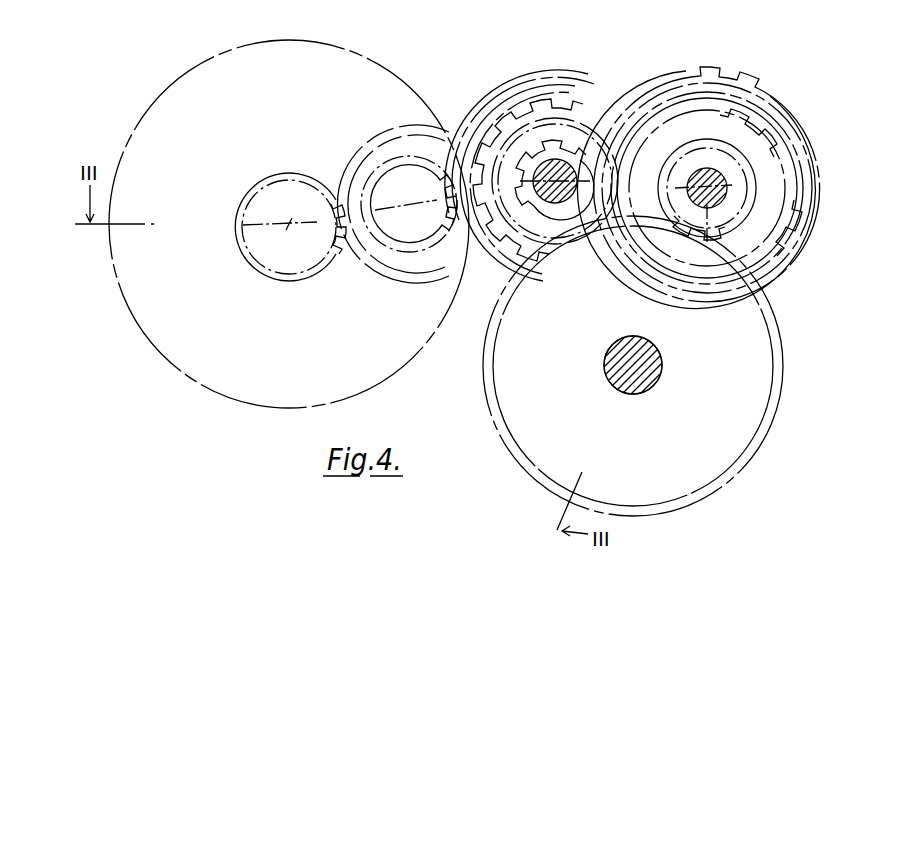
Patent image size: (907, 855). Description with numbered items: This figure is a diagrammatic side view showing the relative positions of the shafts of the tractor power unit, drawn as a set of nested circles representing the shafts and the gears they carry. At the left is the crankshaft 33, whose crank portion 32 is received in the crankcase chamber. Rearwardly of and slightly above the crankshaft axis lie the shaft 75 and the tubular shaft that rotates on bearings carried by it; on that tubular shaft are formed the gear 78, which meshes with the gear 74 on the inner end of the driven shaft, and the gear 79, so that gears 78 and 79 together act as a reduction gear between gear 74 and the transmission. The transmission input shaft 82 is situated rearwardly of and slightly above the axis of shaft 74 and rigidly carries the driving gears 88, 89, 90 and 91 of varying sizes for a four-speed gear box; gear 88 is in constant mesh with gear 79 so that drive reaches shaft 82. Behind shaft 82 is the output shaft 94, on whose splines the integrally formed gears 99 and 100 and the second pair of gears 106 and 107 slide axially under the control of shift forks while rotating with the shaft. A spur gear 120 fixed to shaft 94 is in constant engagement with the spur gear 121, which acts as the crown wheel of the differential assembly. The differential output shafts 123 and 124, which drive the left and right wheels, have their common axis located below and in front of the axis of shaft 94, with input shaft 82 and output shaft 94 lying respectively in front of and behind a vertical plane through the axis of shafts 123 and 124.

The crank portion 32 is at (295, 404).
The crankshaft 33 is at (289, 224).
The gear 74 is at (262, 272).
The shaft 75 is at (412, 204).
The gear 78 is at (367, 268).
The gear 79 is at (420, 252).
The input shaft 82 is at (558, 179).
The gear 88 is at (556, 70).
The gear 89 is at (572, 102).
The gear 90 is at (468, 256).
The gear 91 is at (561, 236).
The output shaft 94 is at (720, 182).
The gear 99 is at (757, 197).
The spur gear 120 is at (760, 188).
The gear 100 is at (790, 215).
The gear 106 is at (795, 242).
The gear 107 is at (796, 272).
The spur gear 121 is at (768, 306).
The output shaft 123 is at (664, 356).
The output shaft 124 is at (640, 365).